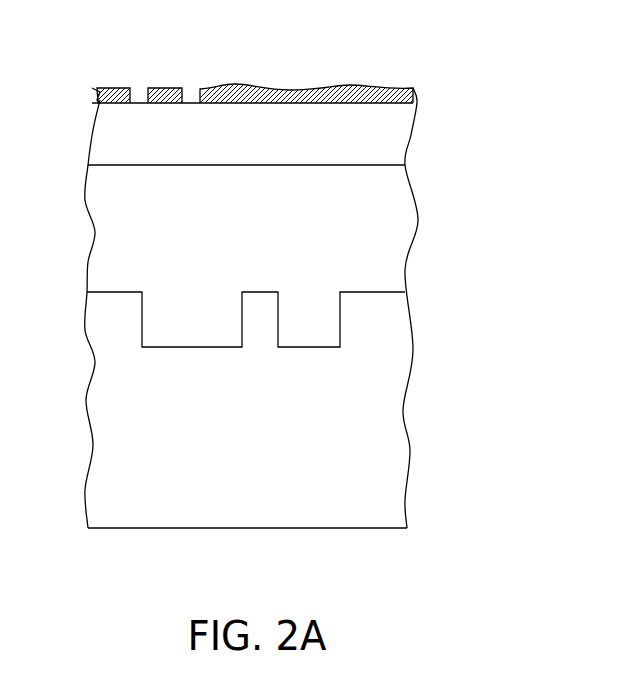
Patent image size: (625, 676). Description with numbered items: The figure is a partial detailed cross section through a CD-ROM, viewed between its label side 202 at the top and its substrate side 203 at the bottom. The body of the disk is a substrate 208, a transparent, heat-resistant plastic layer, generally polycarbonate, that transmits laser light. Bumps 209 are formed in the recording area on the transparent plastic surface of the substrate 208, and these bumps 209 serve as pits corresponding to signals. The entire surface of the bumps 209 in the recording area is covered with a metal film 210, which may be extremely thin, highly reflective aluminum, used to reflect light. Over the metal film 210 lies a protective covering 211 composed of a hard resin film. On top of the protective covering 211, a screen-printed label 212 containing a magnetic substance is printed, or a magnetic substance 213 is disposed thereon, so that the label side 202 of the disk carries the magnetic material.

The label side 202 is at (66, 92).
The substrate side 203 is at (223, 544).
The substrate 208 is at (390, 506).
The bumps 209 is at (370, 292).
The metal film 210 is at (400, 242).
The protective covering 211 is at (407, 143).
The screen-printed label 212 is at (363, 88).
The magnetic substance 213 is at (103, 90).